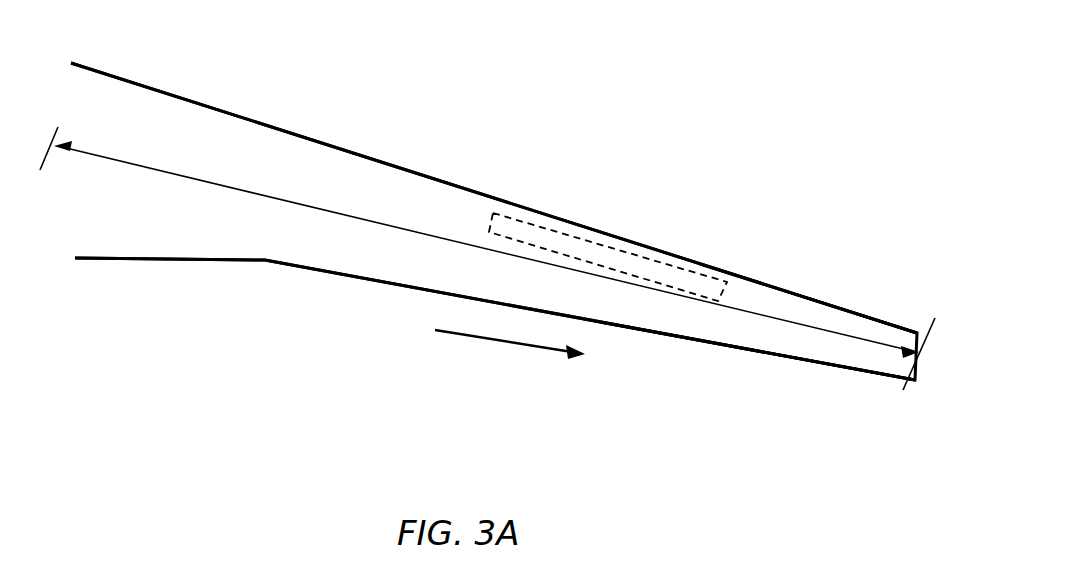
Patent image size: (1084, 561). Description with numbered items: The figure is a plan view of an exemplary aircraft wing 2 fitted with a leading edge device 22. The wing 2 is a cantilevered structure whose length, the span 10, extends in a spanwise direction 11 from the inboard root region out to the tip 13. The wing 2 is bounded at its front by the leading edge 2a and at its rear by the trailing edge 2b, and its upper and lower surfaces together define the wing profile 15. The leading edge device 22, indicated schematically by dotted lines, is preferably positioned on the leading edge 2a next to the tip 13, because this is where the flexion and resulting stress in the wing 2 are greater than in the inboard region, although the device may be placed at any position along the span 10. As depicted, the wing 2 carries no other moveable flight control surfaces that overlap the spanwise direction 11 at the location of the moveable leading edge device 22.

The wing 2 is at (218, 140).
The leading edge 2a is at (355, 150).
The trailing edge 2b is at (880, 378).
The span 10 is at (327, 210).
The spanwise direction 11 is at (500, 340).
The tip 13 is at (743, 295).
The wing profile 15 is at (730, 340).
The leading edge device 22 is at (543, 237).